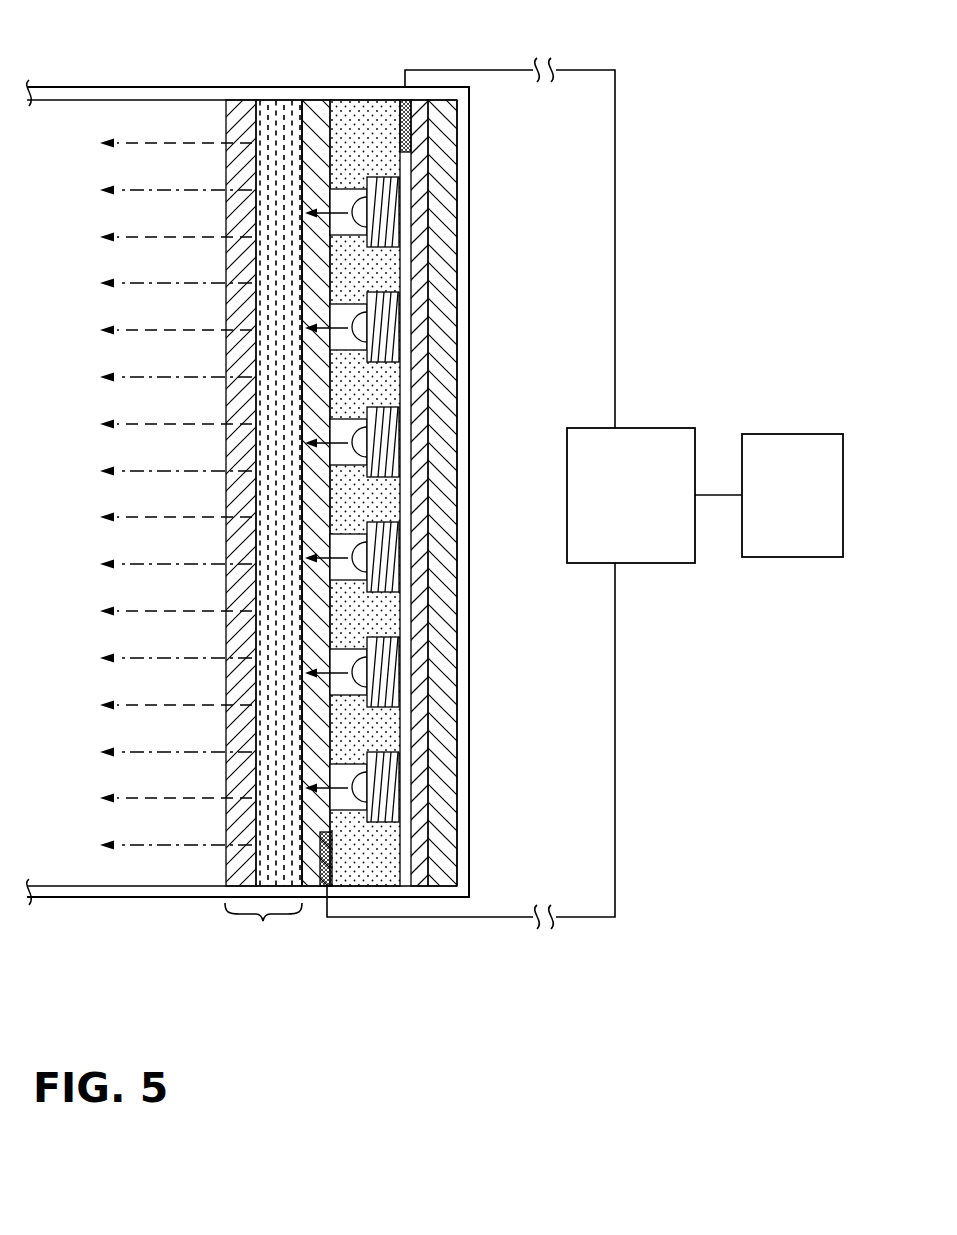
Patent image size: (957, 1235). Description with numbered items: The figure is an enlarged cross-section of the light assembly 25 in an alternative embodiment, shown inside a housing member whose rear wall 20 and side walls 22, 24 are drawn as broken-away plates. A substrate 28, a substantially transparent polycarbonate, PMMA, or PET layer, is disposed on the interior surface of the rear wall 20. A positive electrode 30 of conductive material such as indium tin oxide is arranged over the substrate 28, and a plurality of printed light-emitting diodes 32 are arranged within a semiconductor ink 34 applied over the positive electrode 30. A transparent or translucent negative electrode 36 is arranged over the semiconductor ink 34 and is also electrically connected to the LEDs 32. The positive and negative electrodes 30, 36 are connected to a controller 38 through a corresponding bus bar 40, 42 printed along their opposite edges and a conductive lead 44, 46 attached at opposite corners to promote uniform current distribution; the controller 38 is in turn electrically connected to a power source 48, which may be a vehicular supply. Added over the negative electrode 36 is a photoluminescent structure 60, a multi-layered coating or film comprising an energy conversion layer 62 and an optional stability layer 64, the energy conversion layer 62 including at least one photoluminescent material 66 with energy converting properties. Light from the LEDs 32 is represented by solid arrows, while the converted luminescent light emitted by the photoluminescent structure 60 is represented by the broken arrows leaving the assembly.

The rear wall 20 is at (470, 183).
The side wall 22 is at (148, 897).
The side wall 24 is at (158, 87).
The light assembly 25 is at (120, 119).
The substrate 28 is at (447, 98).
The positive electrode 30 is at (417, 98).
The printed light-emitting diodes 32 is at (385, 213).
The semiconductor ink 34 is at (358, 98).
The negative electrode 36 is at (317, 98).
The controller 38 is at (632, 427).
The bus bar 40 is at (405, 98).
The bus bar 42 is at (318, 888).
The conductive lead 44 is at (503, 70).
The conductive lead 46 is at (500, 917).
The power source 48 is at (760, 433).
The photoluminescent structure 60 is at (263, 928).
The energy conversion layer 62 is at (297, 98).
The stability layer 64 is at (240, 115).
The photoluminescent material 66 is at (272, 125).